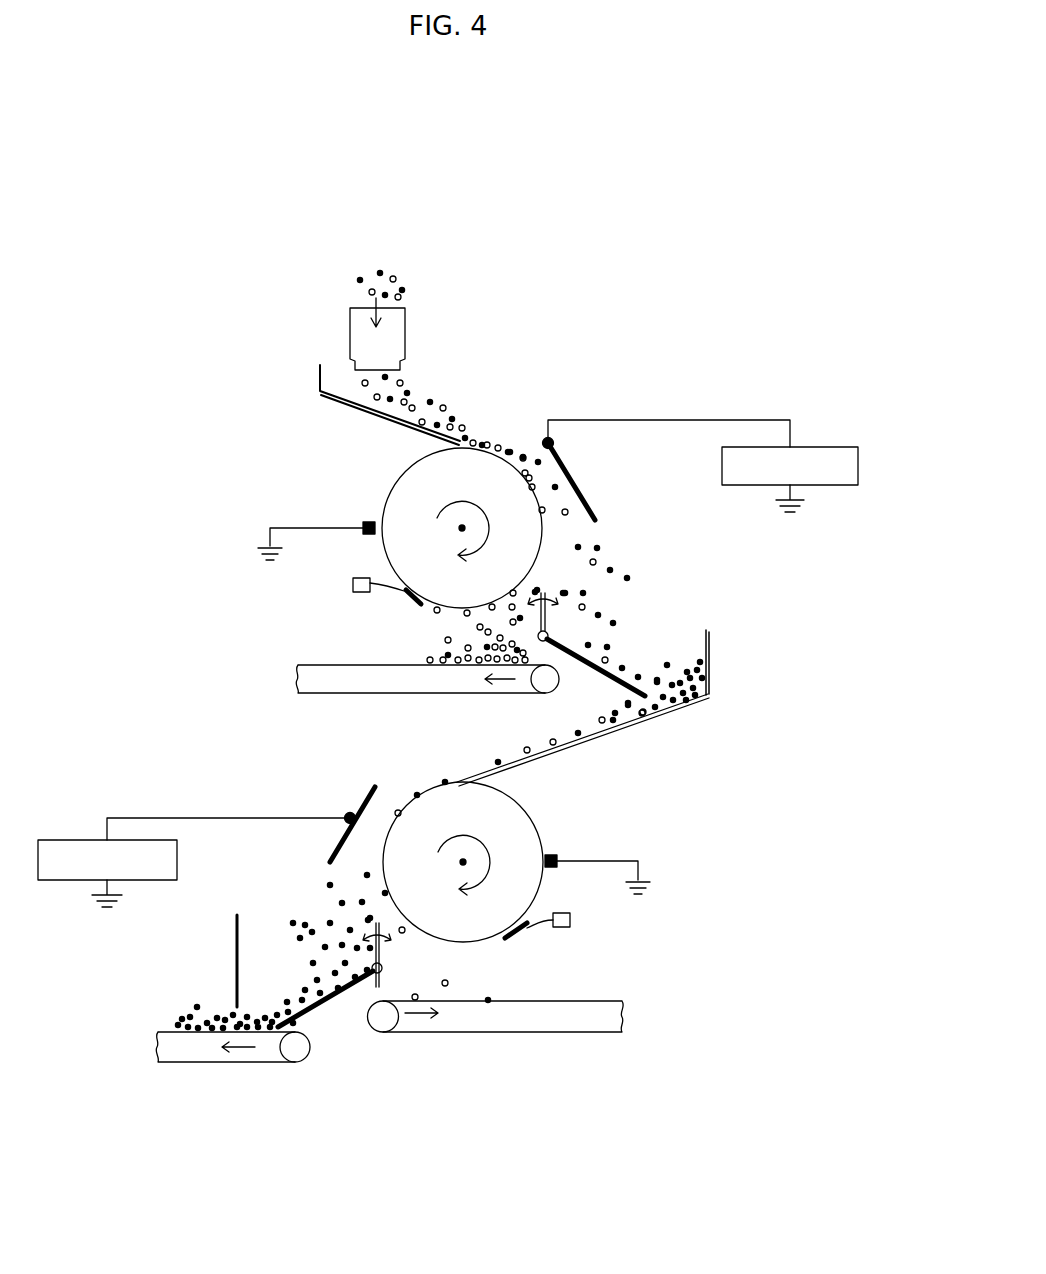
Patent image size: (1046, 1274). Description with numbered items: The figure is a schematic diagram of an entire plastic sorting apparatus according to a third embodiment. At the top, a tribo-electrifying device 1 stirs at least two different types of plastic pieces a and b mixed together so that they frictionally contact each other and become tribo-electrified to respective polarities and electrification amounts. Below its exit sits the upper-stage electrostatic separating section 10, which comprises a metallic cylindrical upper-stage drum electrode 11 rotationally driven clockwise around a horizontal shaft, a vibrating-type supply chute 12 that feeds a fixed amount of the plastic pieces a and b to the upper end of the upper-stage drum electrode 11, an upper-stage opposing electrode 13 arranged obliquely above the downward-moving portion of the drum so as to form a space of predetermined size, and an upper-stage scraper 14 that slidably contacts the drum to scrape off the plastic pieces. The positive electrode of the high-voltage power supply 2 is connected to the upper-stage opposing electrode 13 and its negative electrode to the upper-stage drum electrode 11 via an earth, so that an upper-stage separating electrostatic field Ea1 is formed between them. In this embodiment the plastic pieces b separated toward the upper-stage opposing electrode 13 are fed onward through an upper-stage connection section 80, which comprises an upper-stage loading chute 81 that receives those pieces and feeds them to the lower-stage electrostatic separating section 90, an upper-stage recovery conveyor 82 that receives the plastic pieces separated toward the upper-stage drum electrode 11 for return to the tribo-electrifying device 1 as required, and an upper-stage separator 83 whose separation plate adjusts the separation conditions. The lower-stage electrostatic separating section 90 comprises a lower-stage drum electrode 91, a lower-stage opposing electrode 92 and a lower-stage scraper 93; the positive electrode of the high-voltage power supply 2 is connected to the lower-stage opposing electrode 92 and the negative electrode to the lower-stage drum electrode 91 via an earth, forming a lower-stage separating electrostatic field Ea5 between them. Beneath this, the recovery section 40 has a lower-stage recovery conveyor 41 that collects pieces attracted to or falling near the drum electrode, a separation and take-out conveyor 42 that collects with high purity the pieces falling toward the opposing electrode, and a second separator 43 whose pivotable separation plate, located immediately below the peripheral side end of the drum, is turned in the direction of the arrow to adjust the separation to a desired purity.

The tribo-electrifying device 1 is at (400, 337).
The plastic pieces a is at (360, 280).
The plastic pieces b is at (380, 272).
The upper-stage electrostatic separating section 10 is at (528, 428).
The upper-stage drum electrode 11 is at (382, 497).
The supply chute 12 is at (376, 410).
The upper-stage opposing electrode 13 is at (573, 488).
The upper-stage scraper 14 is at (404, 594).
The high-voltage power supply 2 is at (835, 455).
The upper-stage separating electrostatic field Ea1 is at (557, 523).
The upper-stage connection section 80 is at (686, 616).
The upper-stage loading chute 81 is at (620, 723).
The upper-stage recovery conveyor 82 is at (377, 652).
The upper-stage separator 83 is at (545, 620).
The lower-stage electrostatic separating section 90 is at (331, 790).
The lower-stage drum electrode 91 is at (537, 820).
The lower-stage opposing electrode 92 is at (365, 800).
The lower-stage scraper 93 is at (560, 925).
The lower-stage separating electrostatic field Ea5 is at (380, 817).
The recovery section 40 is at (330, 1070).
The lower-stage recovery conveyor 41 is at (533, 1000).
The separation and take-out conveyor 42 is at (237, 975).
The second separator 43 is at (392, 978).